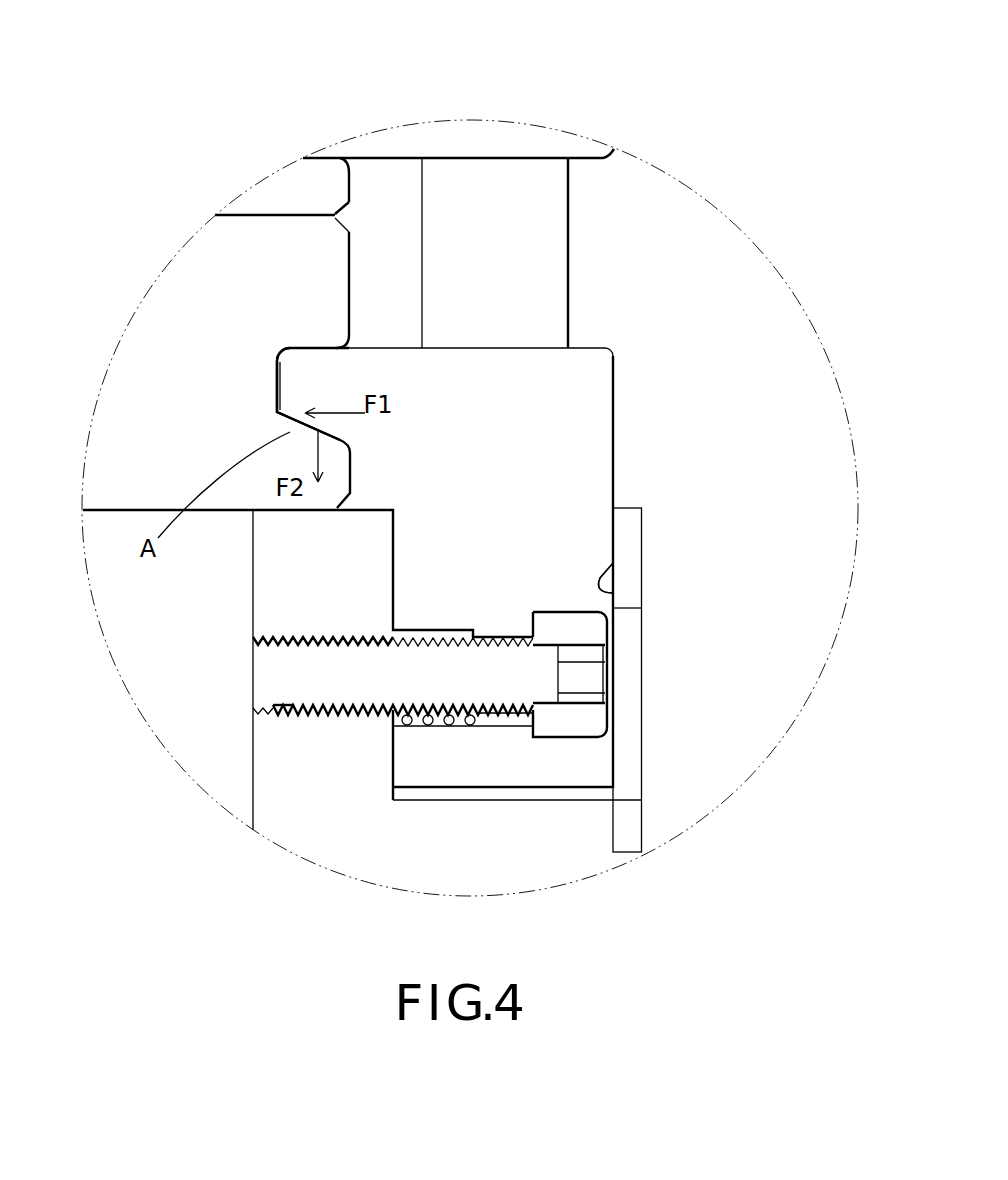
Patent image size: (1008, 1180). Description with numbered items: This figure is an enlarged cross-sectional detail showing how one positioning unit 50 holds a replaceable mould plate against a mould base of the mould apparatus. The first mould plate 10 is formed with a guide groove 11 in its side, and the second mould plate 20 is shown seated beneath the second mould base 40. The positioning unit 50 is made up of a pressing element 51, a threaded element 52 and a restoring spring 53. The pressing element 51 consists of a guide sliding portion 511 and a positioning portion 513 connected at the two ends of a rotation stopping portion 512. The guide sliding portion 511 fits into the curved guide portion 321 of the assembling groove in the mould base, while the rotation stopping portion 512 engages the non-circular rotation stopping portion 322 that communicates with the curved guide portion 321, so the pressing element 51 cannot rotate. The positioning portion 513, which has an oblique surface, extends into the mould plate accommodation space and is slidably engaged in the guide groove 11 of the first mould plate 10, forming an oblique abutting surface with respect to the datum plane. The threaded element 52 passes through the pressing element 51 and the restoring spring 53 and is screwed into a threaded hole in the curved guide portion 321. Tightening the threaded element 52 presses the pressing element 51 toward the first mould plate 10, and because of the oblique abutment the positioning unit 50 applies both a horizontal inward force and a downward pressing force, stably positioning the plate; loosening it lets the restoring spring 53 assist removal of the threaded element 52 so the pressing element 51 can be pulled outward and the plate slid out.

The first mould plate 10 is at (130, 420).
The guide groove 11 is at (277, 380).
The second mould plate 20 is at (362, 173).
The second mould base 40 is at (528, 123).
The positioning unit 50 is at (472, 597).
The pressing element 51 is at (533, 532).
The guide sliding portion 511 is at (568, 770).
The rotation stopping portion 512 is at (567, 547).
The positioning portion 513 is at (571, 422).
The threaded element 52 is at (340, 682).
The restoring spring 53 is at (450, 722).
The curved guide portion 321 is at (625, 664).
The rotation stopping portion 322 is at (597, 593).